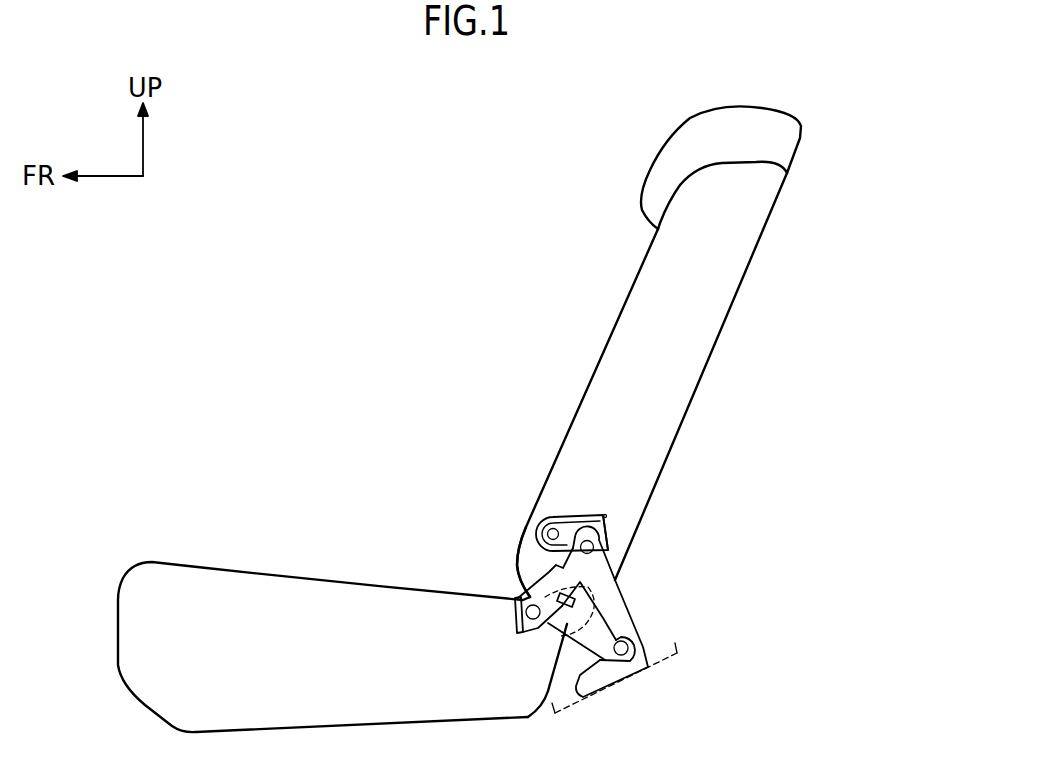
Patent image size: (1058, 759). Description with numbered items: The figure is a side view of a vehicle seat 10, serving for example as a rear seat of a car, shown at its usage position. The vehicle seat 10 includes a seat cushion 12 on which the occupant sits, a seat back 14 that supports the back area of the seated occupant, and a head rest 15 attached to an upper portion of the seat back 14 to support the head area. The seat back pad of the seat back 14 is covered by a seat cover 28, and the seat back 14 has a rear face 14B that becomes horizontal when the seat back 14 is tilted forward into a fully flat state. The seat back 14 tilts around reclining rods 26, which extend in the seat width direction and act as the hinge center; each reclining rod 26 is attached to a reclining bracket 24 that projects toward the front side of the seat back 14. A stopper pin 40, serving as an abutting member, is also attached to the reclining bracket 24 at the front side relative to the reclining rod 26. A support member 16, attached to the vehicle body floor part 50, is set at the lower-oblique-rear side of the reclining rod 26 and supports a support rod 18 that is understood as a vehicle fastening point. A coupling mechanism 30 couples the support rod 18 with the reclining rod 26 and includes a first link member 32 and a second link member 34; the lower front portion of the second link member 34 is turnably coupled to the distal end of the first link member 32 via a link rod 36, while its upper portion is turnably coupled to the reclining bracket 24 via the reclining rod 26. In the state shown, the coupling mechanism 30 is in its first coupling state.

The vehicle seat 10 is at (838, 131).
The seat cushion 12 is at (118, 620).
The seat back 14 is at (720, 340).
The rear face of the seat back 14B is at (690, 405).
The head rest 15 is at (650, 163).
The support member 16 is at (645, 651).
The support rod 18 is at (625, 624).
The reclining bracket 24 is at (583, 514).
The reclining rod 26 is at (608, 534).
The seat cover 28 is at (622, 305).
The coupling mechanism 30 is at (622, 590).
The first link member 32 is at (570, 649).
The second link member 34 is at (537, 580).
The link rod 36 is at (516, 610).
The stopper pin 40 is at (545, 533).
The vehicle body floor part 50 is at (678, 652).